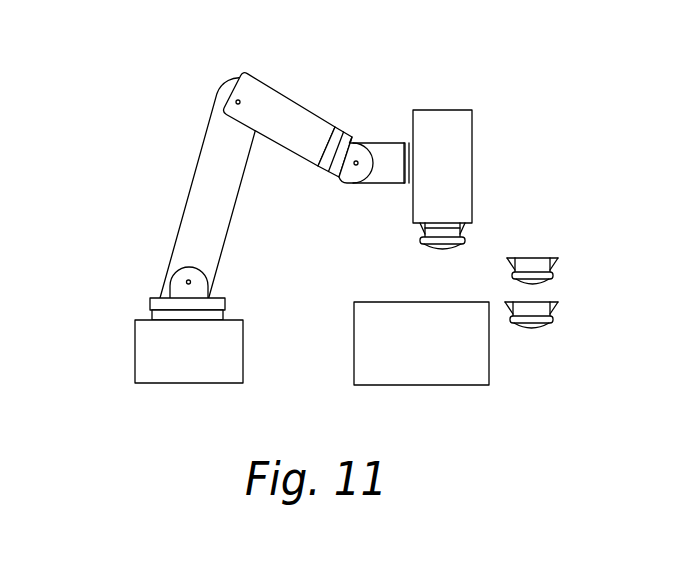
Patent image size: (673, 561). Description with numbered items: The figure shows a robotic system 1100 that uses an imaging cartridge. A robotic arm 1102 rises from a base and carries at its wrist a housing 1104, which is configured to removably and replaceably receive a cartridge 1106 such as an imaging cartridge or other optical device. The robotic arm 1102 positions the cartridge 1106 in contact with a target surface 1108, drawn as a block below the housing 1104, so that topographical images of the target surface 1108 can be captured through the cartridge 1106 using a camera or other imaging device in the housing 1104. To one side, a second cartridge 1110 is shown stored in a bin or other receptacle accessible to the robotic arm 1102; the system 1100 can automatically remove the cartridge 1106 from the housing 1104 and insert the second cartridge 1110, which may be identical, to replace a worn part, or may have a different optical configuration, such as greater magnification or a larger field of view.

The robotic system 1100 is at (234, 211).
The robotic arm 1102 is at (297, 101).
The housing 1104 is at (473, 172).
The cartridge 1106 is at (427, 243).
The target surface 1108 is at (371, 302).
The second cartridge 1110 is at (555, 313).